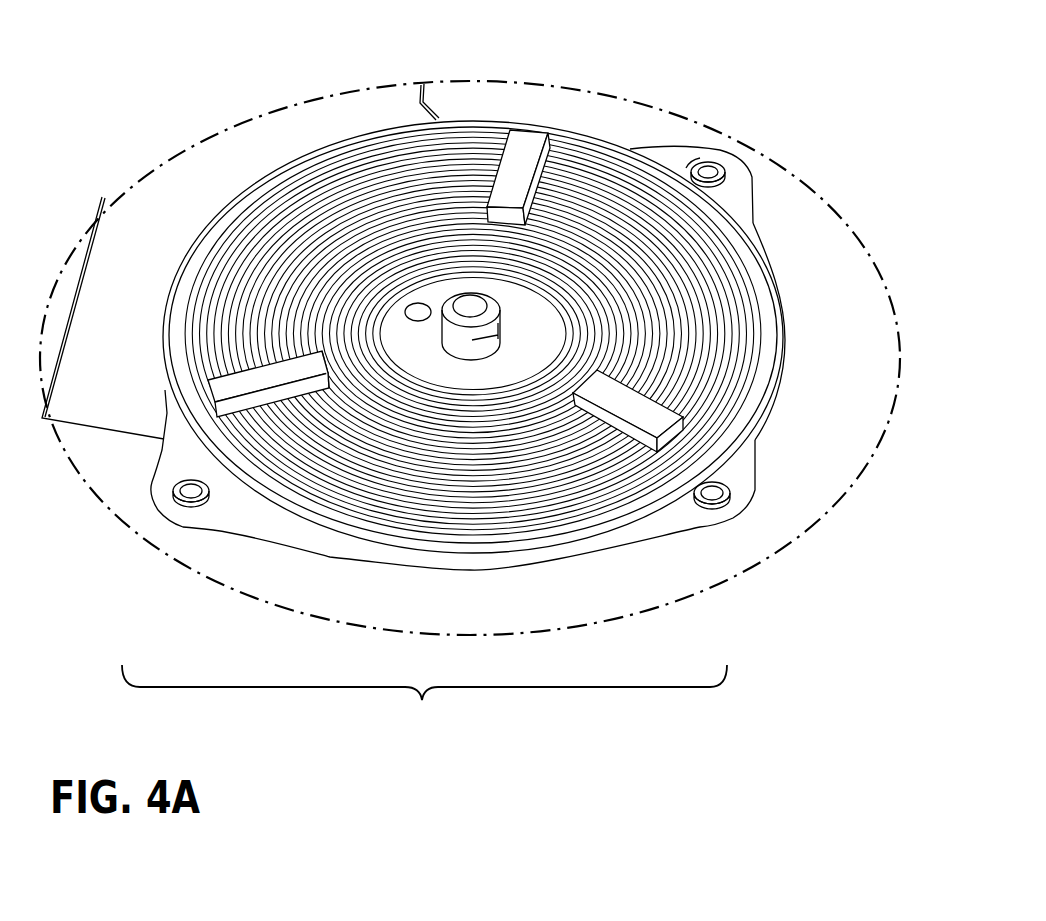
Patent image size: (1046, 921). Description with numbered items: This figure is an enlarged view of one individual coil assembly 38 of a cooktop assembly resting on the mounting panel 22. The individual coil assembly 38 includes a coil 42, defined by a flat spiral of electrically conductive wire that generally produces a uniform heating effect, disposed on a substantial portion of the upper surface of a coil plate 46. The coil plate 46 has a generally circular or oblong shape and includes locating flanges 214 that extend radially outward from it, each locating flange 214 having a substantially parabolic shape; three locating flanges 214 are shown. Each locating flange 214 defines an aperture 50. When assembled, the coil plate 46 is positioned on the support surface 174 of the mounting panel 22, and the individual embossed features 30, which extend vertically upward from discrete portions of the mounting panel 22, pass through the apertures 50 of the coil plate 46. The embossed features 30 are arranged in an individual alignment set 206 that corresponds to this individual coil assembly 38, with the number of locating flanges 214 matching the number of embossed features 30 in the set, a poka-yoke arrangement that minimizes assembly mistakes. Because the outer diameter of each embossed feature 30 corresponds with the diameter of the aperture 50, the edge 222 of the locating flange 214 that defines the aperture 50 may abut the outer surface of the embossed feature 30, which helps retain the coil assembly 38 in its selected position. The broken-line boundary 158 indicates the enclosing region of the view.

The enclosure boundary 158 is at (143, 223).
The mounting panel 22 is at (71, 310).
The individual embossed feature 30 is at (728, 175).
The individual coil assembly 38 is at (743, 247).
The coil 42 is at (703, 300).
The coil plate 46 is at (780, 384).
The aperture 50 is at (708, 165).
The locating flange 214 is at (720, 155).
The edge 222 is at (693, 170).
The support surface 174 is at (352, 603).
The individual alignment set 206 is at (424, 698).